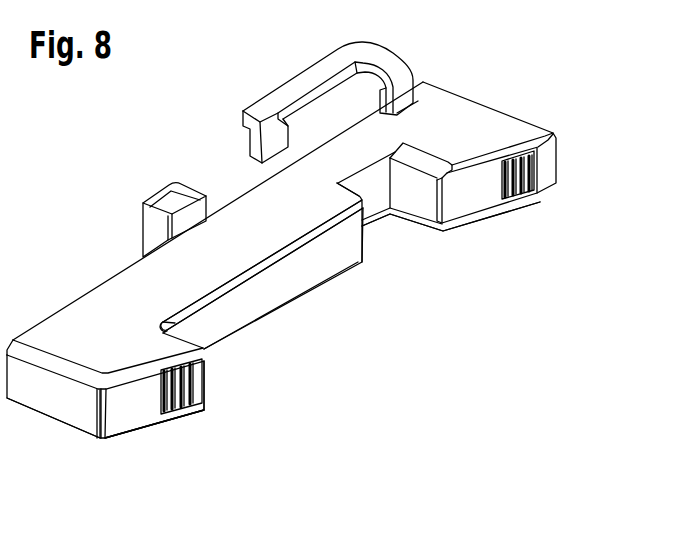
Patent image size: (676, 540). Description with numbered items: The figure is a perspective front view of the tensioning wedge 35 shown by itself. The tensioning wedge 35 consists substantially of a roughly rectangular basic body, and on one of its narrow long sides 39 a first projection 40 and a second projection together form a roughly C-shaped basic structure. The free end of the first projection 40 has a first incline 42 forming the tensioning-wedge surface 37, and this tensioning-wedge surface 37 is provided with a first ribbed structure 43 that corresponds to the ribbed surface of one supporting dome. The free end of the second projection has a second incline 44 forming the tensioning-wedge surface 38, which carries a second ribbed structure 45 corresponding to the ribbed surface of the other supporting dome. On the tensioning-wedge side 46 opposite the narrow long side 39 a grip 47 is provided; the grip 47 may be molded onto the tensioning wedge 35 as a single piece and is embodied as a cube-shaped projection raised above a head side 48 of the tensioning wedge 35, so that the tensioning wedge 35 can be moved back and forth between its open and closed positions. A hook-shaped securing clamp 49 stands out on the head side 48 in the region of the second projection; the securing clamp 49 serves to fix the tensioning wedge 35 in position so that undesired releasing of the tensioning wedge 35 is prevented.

The tensioning wedge 35 is at (468, 84).
The tensioning-wedge surface 37 is at (133, 406).
The tensioning-wedge surface 38 is at (479, 189).
The narrow long side 39 is at (335, 258).
The first projection 40 is at (176, 341).
The first incline 42 is at (163, 422).
The first ribbed structure 43 is at (190, 387).
The second incline 44 is at (470, 219).
The second ribbed structure 45 is at (530, 185).
The tensioning-wedge side 46 is at (88, 296).
The grip 47 is at (167, 197).
The head side 48 is at (236, 254).
The securing clamp 49 is at (292, 88).